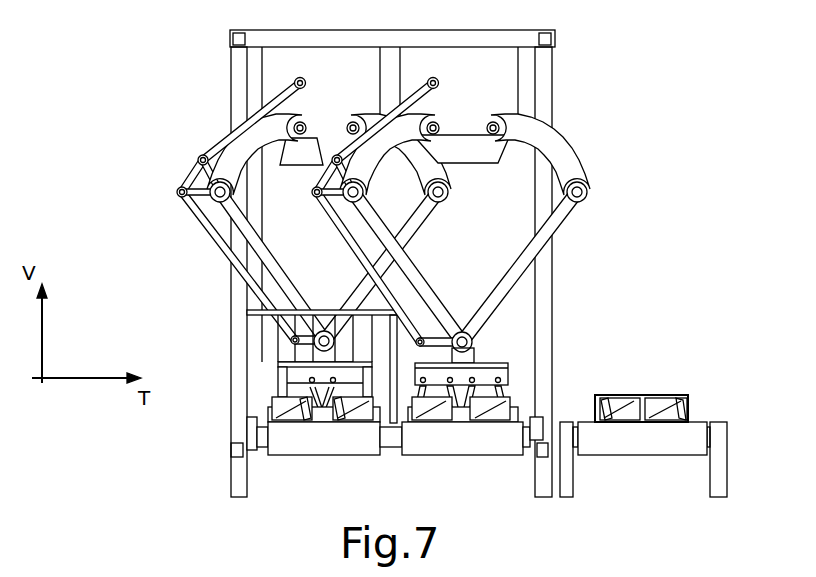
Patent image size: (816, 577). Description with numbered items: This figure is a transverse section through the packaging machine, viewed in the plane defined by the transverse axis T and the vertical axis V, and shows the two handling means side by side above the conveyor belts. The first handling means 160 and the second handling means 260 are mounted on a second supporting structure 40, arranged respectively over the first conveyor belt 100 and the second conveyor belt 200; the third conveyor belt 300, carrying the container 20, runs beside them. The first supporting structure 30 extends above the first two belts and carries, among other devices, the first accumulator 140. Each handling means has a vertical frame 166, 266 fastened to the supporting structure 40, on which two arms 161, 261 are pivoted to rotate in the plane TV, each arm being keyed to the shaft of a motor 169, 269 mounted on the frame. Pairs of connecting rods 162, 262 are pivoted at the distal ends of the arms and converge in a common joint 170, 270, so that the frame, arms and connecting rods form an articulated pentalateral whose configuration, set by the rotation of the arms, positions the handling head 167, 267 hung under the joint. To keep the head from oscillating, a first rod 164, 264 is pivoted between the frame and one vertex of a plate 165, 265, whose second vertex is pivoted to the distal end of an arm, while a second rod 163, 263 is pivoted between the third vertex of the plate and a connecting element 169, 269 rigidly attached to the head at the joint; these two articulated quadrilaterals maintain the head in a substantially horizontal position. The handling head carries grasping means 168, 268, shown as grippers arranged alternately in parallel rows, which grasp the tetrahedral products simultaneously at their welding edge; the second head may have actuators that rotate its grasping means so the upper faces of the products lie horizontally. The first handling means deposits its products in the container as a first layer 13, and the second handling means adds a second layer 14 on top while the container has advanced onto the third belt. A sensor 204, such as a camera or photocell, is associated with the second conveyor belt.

The second supporting structure 40 is at (500, 37).
The vertical frame 166 is at (310, 60).
The vertical frame 266 is at (482, 60).
The first handling means 160 is at (143, 112).
The second handling means 260 is at (577, 112).
The arm 161 is at (253, 147).
The arm 261 is at (365, 188).
The connecting rod 162 is at (275, 275).
The connecting rod 262 is at (418, 280).
The second rod 163 is at (210, 228).
The second rod 263 is at (313, 203).
The first rod 164 is at (218, 140).
The first rod 264 is at (420, 88).
The plate 165 is at (195, 177).
The plate 265 is at (314, 191).
The common joint 170 is at (320, 334).
The common joint 270 is at (468, 328).
The first supporting structure 30 is at (243, 307).
The first accumulator 140 is at (363, 332).
The handling head 167 is at (278, 372).
The grasping means 168 is at (278, 392).
The motor 169 is at (305, 355).
The second handling head 267 is at (477, 365).
The grasping means 268 is at (510, 382).
The motor 269 is at (432, 350).
The first conveyor belt 100 is at (260, 452).
The second conveyor belt 200 is at (460, 443).
The sensor 204 is at (540, 420).
The third conveyor belt 300 is at (632, 448).
The second layer 14 is at (618, 402).
The container 20 is at (648, 393).
The first layer 13 is at (672, 398).